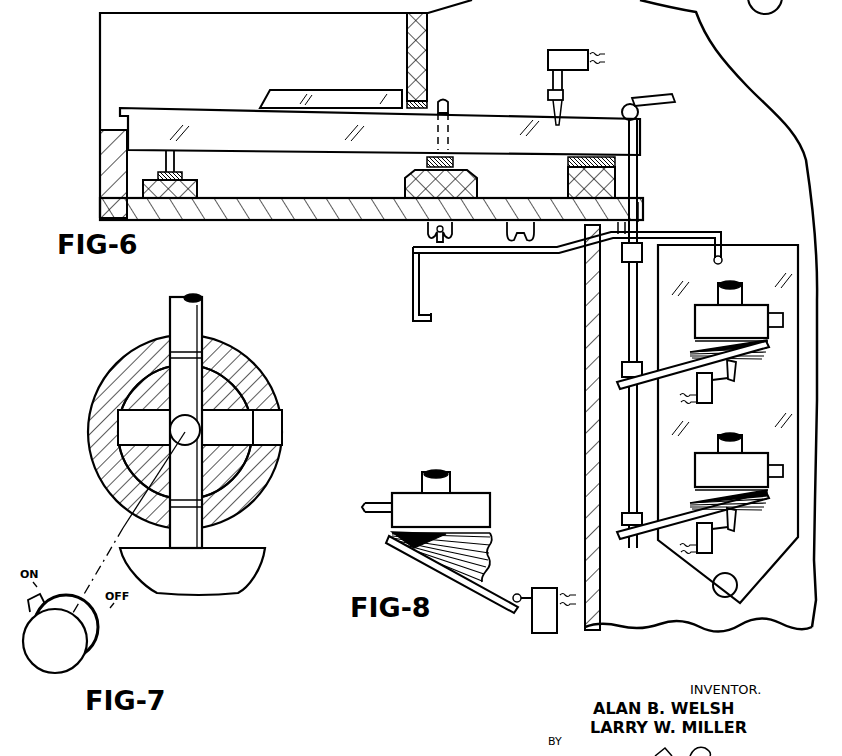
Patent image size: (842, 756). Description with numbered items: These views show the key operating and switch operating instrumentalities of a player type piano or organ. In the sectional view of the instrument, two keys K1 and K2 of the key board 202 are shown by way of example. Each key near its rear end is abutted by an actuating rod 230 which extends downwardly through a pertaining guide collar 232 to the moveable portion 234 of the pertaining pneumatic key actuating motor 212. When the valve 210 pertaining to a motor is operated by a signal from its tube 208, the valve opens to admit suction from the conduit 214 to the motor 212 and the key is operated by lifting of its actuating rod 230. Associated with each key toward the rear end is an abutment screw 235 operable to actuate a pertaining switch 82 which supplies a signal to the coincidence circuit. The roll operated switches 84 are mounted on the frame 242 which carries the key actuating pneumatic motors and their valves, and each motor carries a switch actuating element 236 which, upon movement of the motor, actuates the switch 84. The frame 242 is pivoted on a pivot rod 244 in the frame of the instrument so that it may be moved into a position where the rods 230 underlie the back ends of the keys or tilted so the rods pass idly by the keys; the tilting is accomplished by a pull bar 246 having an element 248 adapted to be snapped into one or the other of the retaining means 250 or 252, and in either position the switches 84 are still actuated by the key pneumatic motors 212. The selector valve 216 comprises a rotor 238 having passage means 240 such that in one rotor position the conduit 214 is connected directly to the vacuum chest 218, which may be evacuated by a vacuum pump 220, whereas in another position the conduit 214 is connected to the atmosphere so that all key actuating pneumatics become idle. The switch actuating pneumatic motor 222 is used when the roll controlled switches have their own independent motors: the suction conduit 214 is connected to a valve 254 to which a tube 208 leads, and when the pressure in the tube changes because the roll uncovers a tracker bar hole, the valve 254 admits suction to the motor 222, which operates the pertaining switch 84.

In FIG. 6, the key board 202 is at (203, 84).
In FIG. 6, the key K1 is at (247, 113).
In FIG. 6, the key K2 is at (342, 97).
In FIG. 6, the switch 82 is at (569, 58).
In FIG. 6, the abutment screw 235 is at (566, 104).
In FIG. 6, the vacuum pump 220 is at (765, 14).
In FIG. 6, the actuating rod 230 is at (638, 176).
In FIG. 6, the guide collar 232 is at (622, 258).
In FIG. 6, the moveable portion 234 is at (618, 384).
In FIG. 6, the switch actuating element 236 is at (733, 373).
In FIG. 6, the frame 242 is at (748, 250).
In FIG. 6, the pivot rod 244 is at (722, 592).
In FIG. 6, the pull bar 246 is at (482, 252).
In FIG. 6, the element 248 is at (447, 253).
In FIG. 6, the retaining means 250 is at (427, 231).
In FIG. 6, the retaining means 252 is at (507, 222).
In FIG. 6, the valve 210 is at (722, 354).
In FIG. 6, the tube 208 is at (767, 309).
In FIG. 8, the tube 208 is at (384, 512).
In FIG. 6, the pneumatic key actuating motor 212 is at (688, 356).
In FIG. 6, the conduit 214 is at (727, 283).
In FIG. 7, the conduit 214 is at (196, 310).
In FIG. 8, the conduit 214 is at (424, 483).
In FIG. 6, the roll operated switch 84 is at (705, 403).
In FIG. 8, the roll operated switch 84 is at (547, 633).
In FIG. 7, the selector valve 216 is at (271, 359).
In FIG. 7, the rotor 238 is at (237, 400).
In FIG. 7, the passage means 240 is at (195, 470).
In FIG. 7, the vacuum chest 218 is at (245, 553).
In FIG. 8, the valve 254 is at (482, 512).
In FIG. 8, the switch actuating pneumatic motor 222 is at (437, 553).